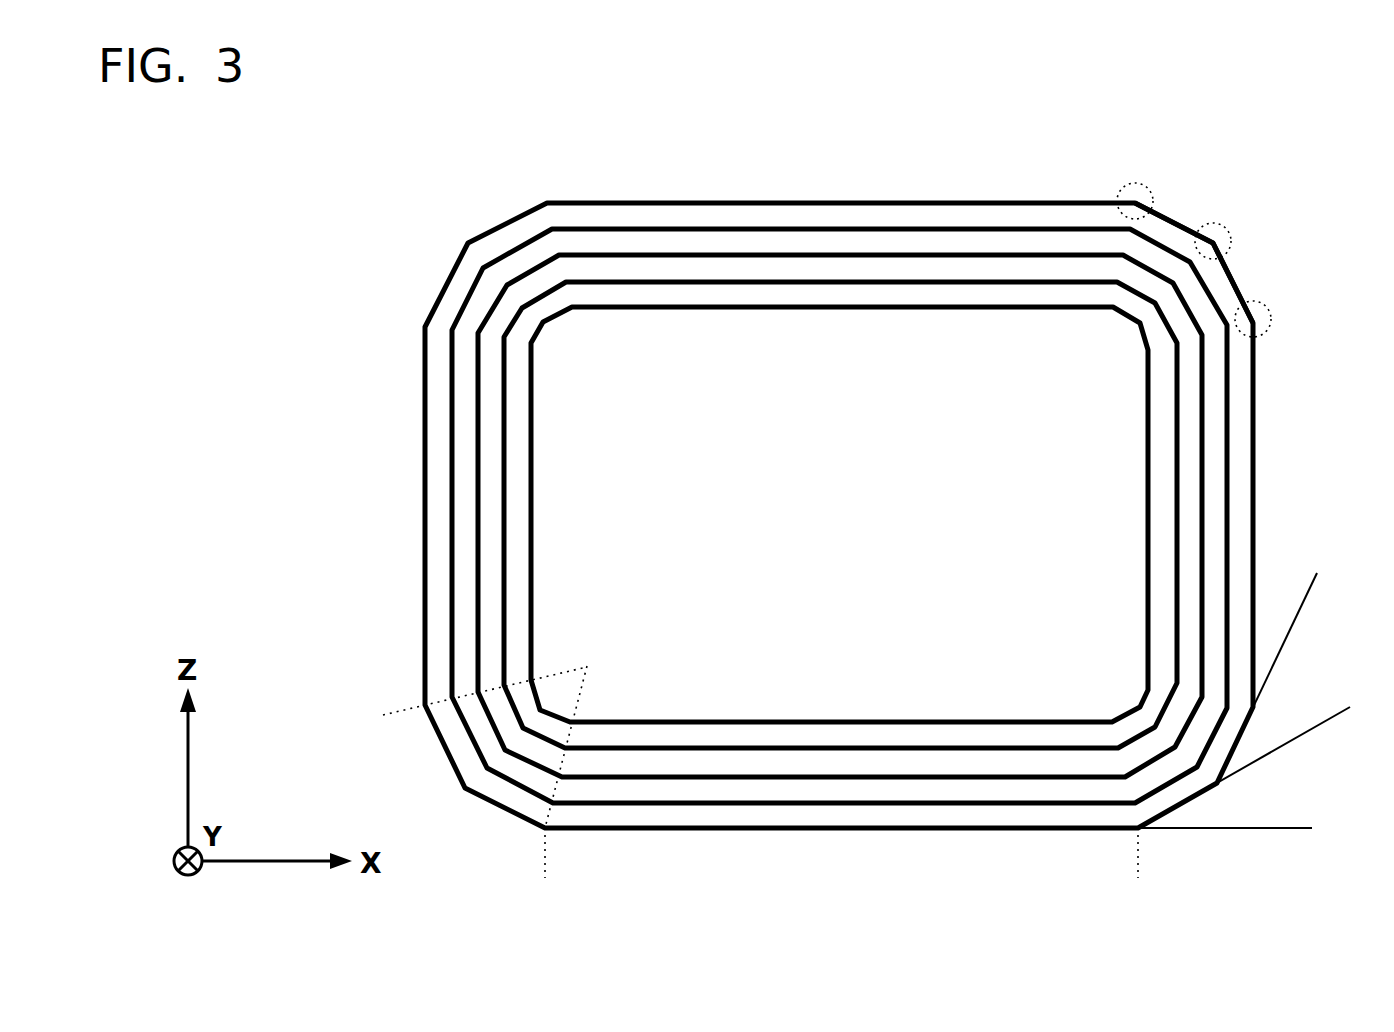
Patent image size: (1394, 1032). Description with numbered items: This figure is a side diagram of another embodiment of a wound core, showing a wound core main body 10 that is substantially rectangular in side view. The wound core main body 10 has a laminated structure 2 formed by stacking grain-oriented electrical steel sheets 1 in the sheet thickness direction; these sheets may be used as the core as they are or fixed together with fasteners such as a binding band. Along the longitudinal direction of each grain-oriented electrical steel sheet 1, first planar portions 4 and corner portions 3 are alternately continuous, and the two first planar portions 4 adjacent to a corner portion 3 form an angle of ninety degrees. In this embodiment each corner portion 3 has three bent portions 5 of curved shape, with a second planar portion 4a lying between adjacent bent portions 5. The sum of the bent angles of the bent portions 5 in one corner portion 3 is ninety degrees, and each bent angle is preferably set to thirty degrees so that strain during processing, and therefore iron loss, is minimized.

The wound core main body 10 is at (848, 135).
The grain-oriented electrical steel sheet 1 is at (1242, 421).
The laminated structure 2 is at (1147, 485).
The corner portion 3 is at (540, 852).
The first planar portion 4 is at (1160, 862).
The second planar portion 4a is at (1173, 218).
The bent portion 5 is at (1135, 183).